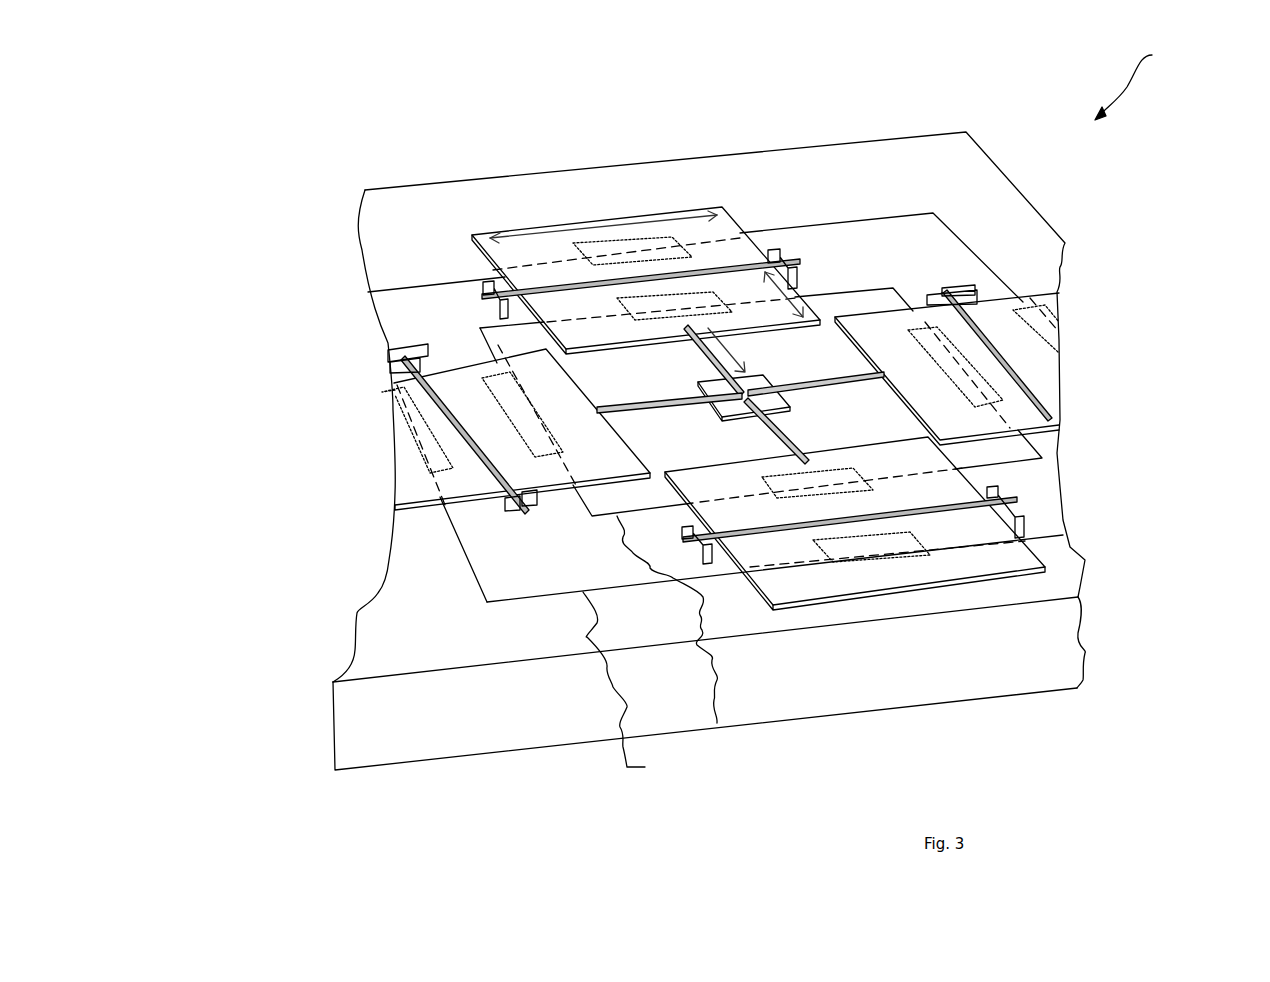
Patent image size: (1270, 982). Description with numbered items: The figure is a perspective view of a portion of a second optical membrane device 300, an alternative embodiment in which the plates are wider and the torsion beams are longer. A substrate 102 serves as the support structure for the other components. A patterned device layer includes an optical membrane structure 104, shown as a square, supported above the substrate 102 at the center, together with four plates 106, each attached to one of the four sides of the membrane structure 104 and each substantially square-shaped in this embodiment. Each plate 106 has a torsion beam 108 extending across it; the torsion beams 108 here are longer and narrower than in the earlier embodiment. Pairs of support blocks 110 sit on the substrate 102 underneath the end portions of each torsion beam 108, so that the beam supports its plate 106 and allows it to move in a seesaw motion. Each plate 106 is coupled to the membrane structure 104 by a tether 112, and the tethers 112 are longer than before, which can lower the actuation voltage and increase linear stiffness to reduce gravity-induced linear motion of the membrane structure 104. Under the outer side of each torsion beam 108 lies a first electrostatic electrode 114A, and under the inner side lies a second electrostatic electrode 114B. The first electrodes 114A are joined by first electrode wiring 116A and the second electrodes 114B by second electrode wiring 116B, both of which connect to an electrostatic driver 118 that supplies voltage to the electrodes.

The second optical membrane device 300 is at (1143, 85).
The substrate 102 is at (398, 718).
The optical membrane structure 104 is at (740, 392).
The plate 106 is at (543, 245).
The torsion beam 108 is at (712, 267).
The support block 110 is at (790, 262).
The tether 112 is at (687, 343).
The first electrostatic electrode 114A is at (637, 250).
The second electrostatic electrode 114B is at (693, 302).
The first electrode wiring 116A is at (483, 581).
The second electrode wiring 116B is at (1033, 450).
The electrostatic driver 118 is at (711, 770).